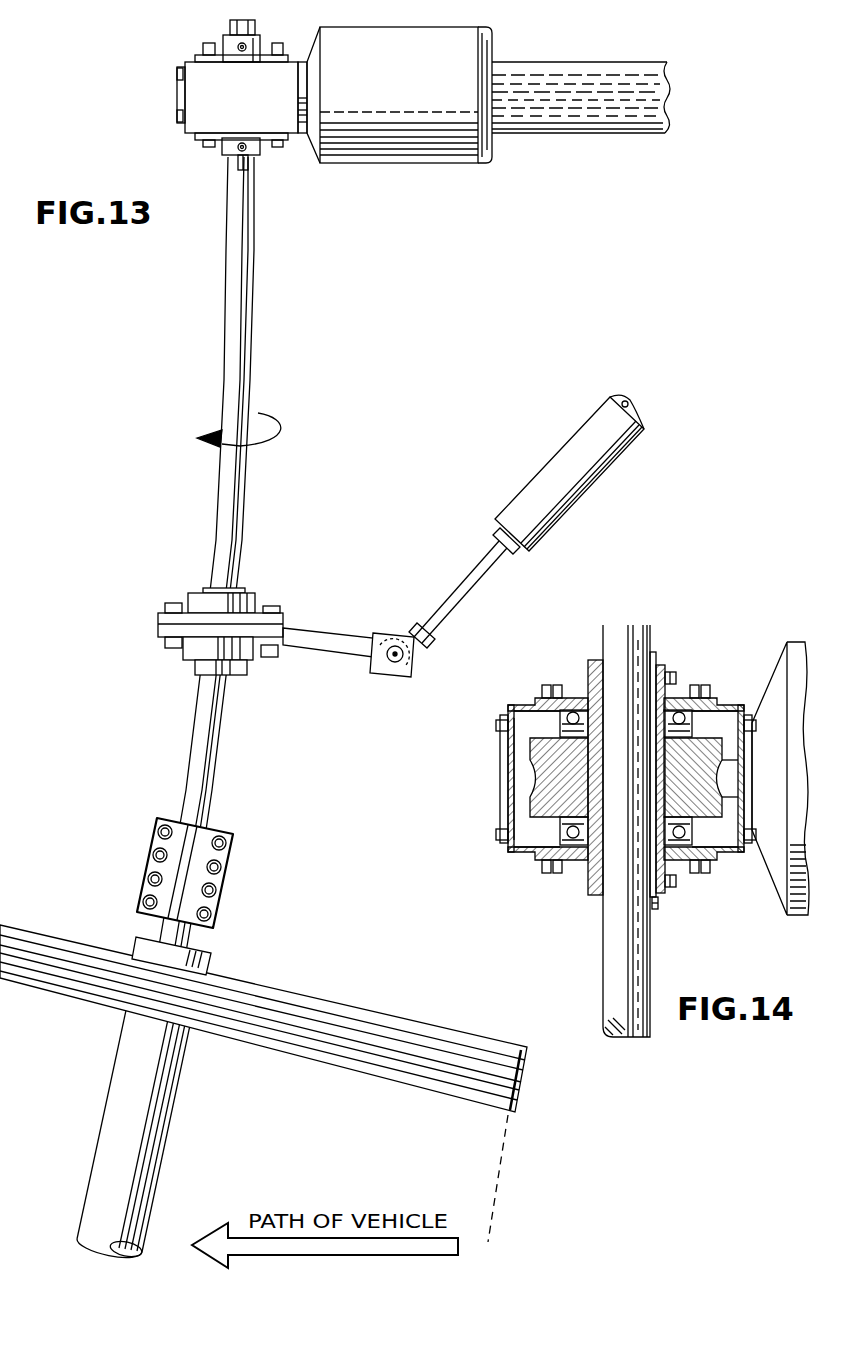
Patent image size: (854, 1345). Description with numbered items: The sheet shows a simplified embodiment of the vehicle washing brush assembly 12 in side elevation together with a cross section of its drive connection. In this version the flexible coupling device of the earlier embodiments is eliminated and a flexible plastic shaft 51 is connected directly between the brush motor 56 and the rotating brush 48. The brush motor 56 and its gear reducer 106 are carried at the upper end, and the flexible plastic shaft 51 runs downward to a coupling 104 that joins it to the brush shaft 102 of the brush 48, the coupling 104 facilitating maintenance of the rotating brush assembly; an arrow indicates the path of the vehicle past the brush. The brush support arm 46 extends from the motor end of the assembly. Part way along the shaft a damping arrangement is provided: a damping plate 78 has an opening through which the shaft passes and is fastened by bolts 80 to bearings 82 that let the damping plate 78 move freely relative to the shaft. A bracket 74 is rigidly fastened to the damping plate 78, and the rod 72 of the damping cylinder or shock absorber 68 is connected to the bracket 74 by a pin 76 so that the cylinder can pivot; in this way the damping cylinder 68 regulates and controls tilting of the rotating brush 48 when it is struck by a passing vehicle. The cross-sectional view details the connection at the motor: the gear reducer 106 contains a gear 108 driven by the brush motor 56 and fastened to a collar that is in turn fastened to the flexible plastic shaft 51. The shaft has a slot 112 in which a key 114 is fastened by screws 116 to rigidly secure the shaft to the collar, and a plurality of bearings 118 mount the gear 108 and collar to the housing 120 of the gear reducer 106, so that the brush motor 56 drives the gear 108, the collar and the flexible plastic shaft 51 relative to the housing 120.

In FIG. 13, the brush assembly 12 is at (212, 508).
In FIG. 13, the brush support arm 46 is at (570, 78).
In FIG. 13, the rotating brush 48 is at (367, 1013).
In FIG. 13, the shaft 51 is at (250, 314).
In FIG. 14, the shaft 51 is at (627, 977).
In FIG. 13, the brush motor 56 is at (442, 150).
In FIG. 14, the brush motor 56 is at (776, 668).
In FIG. 13, the damping cylinder or shock absorber 68 is at (583, 443).
In FIG. 13, the rod 72 is at (482, 556).
In FIG. 13, the bracket 74 is at (380, 637).
In FIG. 13, the pin 76 is at (405, 668).
In FIG. 13, the damping plate 78 is at (322, 654).
In FIG. 13, the bolts 80 is at (173, 602).
In FIG. 13, the bearings 82 is at (190, 650).
In FIG. 13, the brush shaft 102 is at (165, 937).
In FIG. 13, the coupling 104 is at (185, 848).
In FIG. 13, the gear reducer 106 is at (170, 84).
In FIG. 14, the gear reducer 106 is at (498, 757).
In FIG. 14, the gear 108 is at (532, 777).
In FIG. 13, the slot 112 is at (245, 165).
In FIG. 14, the slot 112 is at (657, 907).
In FIG. 14, the key 114 is at (660, 658).
In FIG. 13, the screws 116 is at (232, 143).
In FIG. 14, the screws 116 is at (670, 678).
In FIG. 14, the bearings 118 is at (577, 697).
In FIG. 14, the housing 120 is at (512, 843).